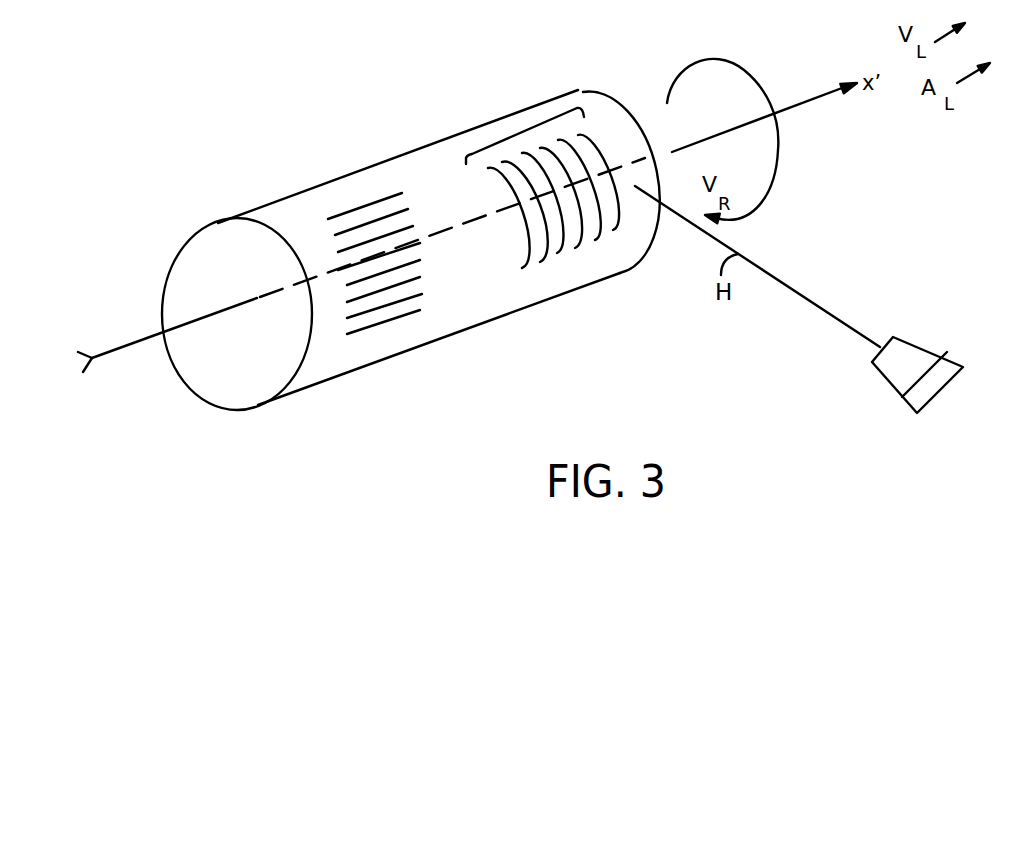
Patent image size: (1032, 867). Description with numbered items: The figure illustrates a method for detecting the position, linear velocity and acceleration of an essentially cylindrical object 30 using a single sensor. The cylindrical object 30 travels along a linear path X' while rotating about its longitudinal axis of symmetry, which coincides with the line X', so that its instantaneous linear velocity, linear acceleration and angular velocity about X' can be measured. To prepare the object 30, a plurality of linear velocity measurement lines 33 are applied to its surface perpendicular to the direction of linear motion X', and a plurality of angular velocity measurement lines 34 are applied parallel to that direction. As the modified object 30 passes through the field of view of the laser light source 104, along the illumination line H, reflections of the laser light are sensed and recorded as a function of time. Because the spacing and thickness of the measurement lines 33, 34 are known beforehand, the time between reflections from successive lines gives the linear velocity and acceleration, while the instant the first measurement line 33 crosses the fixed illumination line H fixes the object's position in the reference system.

The cylindrical object 30 is at (288, 197).
The linear velocity measurement lines 33 is at (527, 130).
The angular velocity measurement lines 34 is at (415, 192).
The laser light source 104 is at (920, 343).